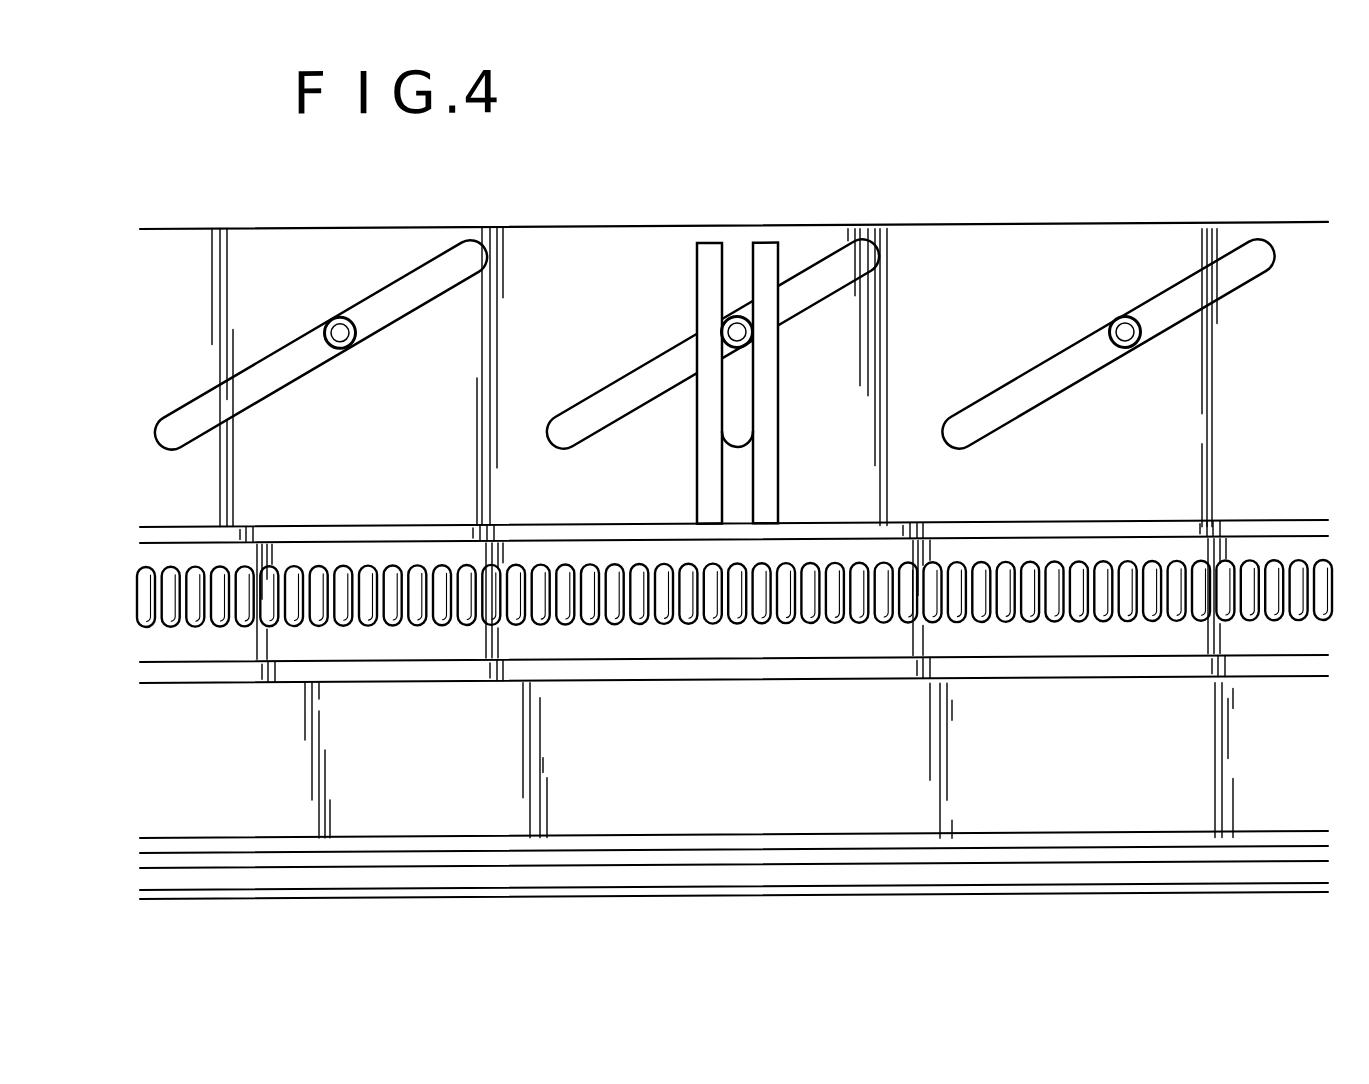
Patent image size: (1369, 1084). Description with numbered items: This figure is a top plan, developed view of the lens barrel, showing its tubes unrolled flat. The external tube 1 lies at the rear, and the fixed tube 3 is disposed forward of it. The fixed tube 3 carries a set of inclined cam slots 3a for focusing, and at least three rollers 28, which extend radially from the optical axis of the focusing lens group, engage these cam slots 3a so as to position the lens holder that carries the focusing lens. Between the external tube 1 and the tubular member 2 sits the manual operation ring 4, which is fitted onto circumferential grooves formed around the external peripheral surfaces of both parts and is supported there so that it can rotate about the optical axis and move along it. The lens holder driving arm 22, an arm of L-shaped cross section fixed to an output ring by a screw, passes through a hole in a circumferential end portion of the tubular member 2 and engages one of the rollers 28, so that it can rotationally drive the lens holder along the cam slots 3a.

The external tube 1 is at (462, 818).
The tubular member 2 is at (397, 542).
The fixed tube 3 is at (937, 266).
The cam slot 3a is at (813, 262).
The manual operation ring 4 is at (532, 555).
The lens holder driving arm 22 is at (765, 258).
The roller 28 is at (735, 321).